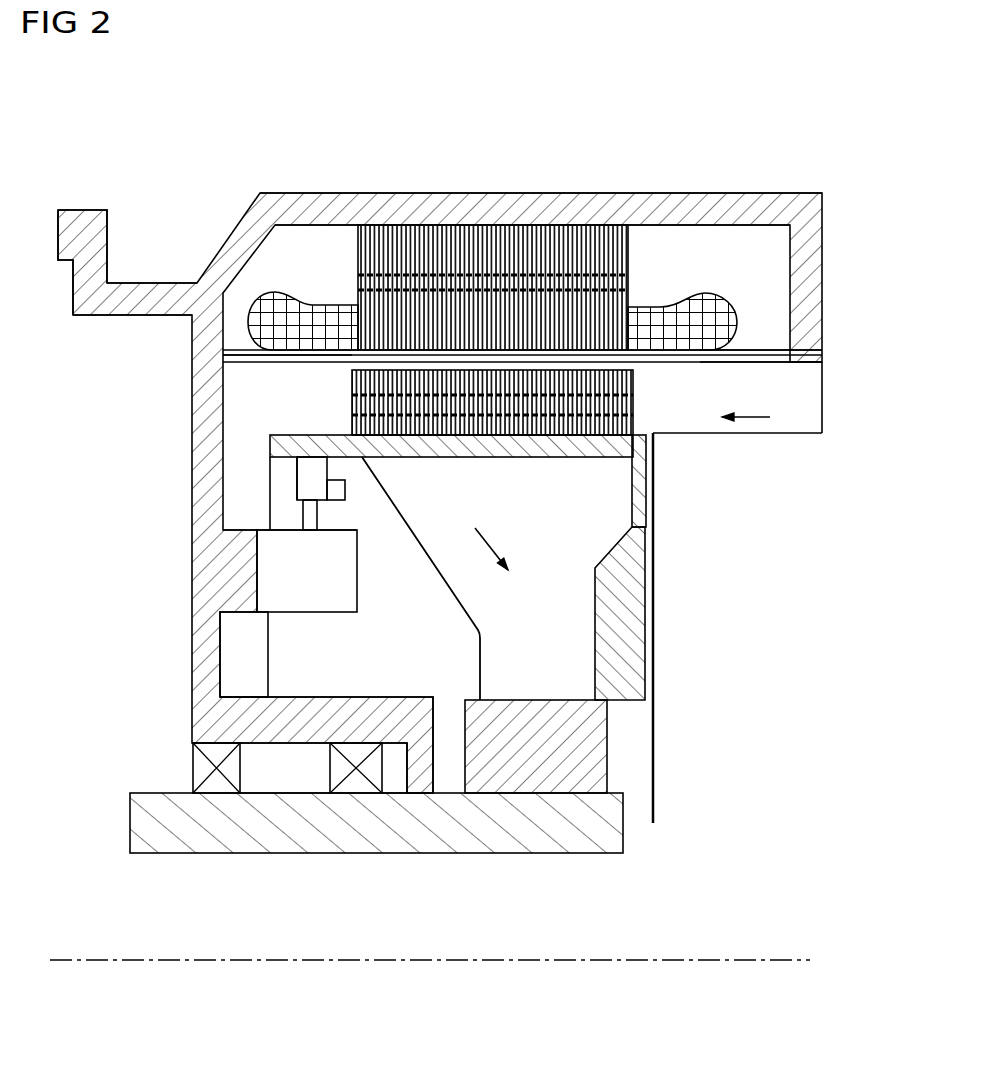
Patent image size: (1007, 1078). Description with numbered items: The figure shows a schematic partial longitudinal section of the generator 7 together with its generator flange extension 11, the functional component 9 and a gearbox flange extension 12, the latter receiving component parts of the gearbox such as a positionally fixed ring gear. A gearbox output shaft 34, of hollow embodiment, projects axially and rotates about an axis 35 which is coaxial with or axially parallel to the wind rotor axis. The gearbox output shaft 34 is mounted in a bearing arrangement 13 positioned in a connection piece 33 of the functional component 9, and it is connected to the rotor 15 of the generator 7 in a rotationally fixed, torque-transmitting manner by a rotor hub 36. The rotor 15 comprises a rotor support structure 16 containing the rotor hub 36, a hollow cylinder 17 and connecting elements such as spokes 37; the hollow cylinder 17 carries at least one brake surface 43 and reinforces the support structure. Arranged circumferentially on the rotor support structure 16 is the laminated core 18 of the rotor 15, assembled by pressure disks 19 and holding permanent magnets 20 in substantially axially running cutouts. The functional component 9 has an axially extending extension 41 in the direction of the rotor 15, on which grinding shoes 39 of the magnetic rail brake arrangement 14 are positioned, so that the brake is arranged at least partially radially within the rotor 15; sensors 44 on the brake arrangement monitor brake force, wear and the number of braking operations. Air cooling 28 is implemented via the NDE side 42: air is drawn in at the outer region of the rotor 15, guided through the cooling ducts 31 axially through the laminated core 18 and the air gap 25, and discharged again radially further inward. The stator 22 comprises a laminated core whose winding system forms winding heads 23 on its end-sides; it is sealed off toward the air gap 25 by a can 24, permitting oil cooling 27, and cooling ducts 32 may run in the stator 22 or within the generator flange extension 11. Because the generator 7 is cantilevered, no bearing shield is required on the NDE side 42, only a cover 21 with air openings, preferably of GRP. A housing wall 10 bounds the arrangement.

The generator 7 is at (353, 130).
The functional component 9 is at (187, 327).
The housing 10 is at (207, 400).
The generator flange extension 11 is at (410, 200).
The gearbox flange extension 12 is at (90, 210).
The bearing arrangement 13 is at (170, 773).
The magnetic rail brake arrangement 14 is at (293, 483).
The rotor 15 is at (530, 505).
The rotor support structure 16 is at (595, 610).
The hollow cylinder 17 is at (273, 448).
The laminated core 18 is at (438, 437).
The pressure disks 19 is at (353, 413).
The permanent magnets 20 is at (353, 367).
The cover 21 is at (653, 570).
The stator 22 is at (493, 235).
The winding heads 23 is at (745, 325).
The can 24 is at (785, 370).
The air gap 25 is at (633, 362).
The oil cooling 27 is at (310, 247).
The air cooling 28 is at (770, 410).
The cooling ducts 31 is at (620, 413).
The cooling ducts 32 is at (540, 243).
The connection piece 33 is at (257, 720).
The gearbox output shaft 34 is at (610, 817).
The axis 35 is at (718, 960).
The rotor hub 36 is at (597, 770).
The spokes 37 is at (595, 638).
The grinding shoes 39 is at (307, 473).
The extension 41 is at (233, 557).
The NDE side 42 is at (822, 670).
The brake surface 43 is at (300, 428).
The sensors 44 is at (340, 503).